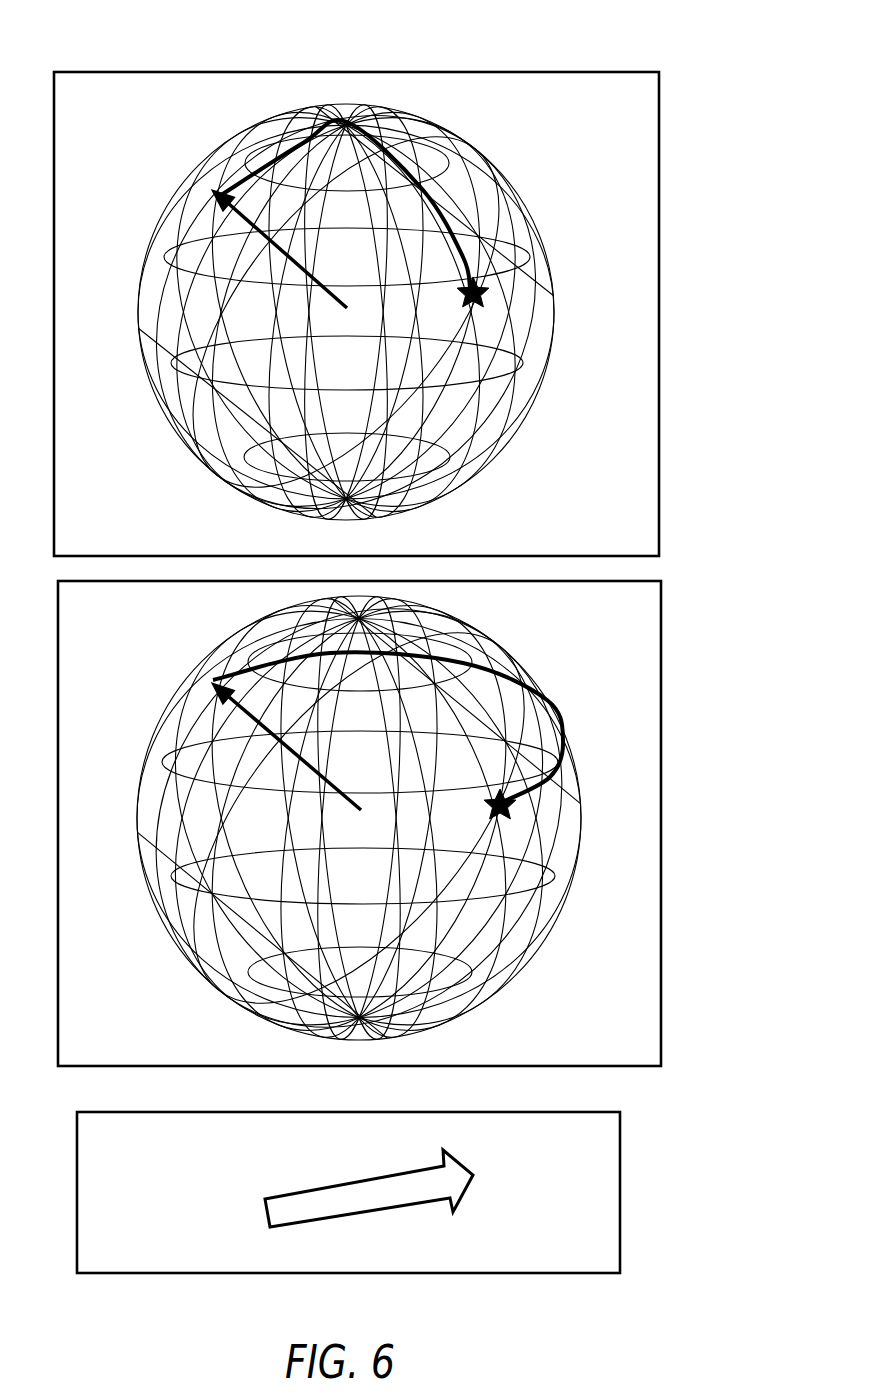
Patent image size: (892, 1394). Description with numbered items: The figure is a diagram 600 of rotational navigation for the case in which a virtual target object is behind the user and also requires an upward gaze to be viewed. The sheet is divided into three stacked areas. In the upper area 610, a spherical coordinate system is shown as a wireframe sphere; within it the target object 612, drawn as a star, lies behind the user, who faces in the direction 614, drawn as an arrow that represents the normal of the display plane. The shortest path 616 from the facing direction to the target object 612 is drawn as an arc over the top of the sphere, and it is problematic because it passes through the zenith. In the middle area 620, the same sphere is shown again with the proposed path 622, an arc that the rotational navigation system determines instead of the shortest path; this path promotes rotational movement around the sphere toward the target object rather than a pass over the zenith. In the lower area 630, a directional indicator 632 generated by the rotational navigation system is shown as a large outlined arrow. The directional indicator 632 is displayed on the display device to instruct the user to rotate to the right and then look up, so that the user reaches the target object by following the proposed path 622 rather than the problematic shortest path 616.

The diagram 600 is at (737, 46).
The area 610 is at (410, 312).
The target object 612 is at (487, 283).
The direction 614 is at (264, 244).
The shortest path 616 is at (392, 162).
The area 620 is at (412, 818).
The proposed path 622 is at (523, 690).
The area 630 is at (401, 1192).
The directional indicator 632 is at (465, 1193).